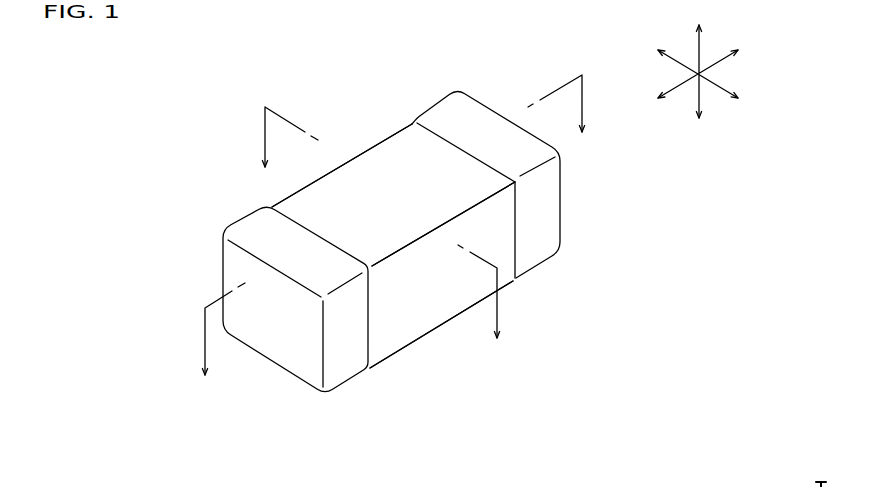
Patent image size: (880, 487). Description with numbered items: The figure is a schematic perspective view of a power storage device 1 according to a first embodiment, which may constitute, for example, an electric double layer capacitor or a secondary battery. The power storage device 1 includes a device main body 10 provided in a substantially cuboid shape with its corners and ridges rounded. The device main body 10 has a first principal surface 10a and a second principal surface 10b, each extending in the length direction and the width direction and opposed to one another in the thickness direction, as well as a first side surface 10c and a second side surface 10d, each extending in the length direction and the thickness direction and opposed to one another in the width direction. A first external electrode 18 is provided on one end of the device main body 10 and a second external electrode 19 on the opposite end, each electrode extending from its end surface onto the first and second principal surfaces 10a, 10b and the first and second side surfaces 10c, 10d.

The power storage device 1 is at (518, 67).
The device main body 10 is at (378, 123).
The first principal surface 10a is at (372, 170).
The second principal surface 10b is at (427, 332).
The first side surface 10c is at (400, 128).
The second side surface 10d is at (392, 333).
The first external electrode 18 is at (222, 275).
The second external electrode 19 is at (560, 205).